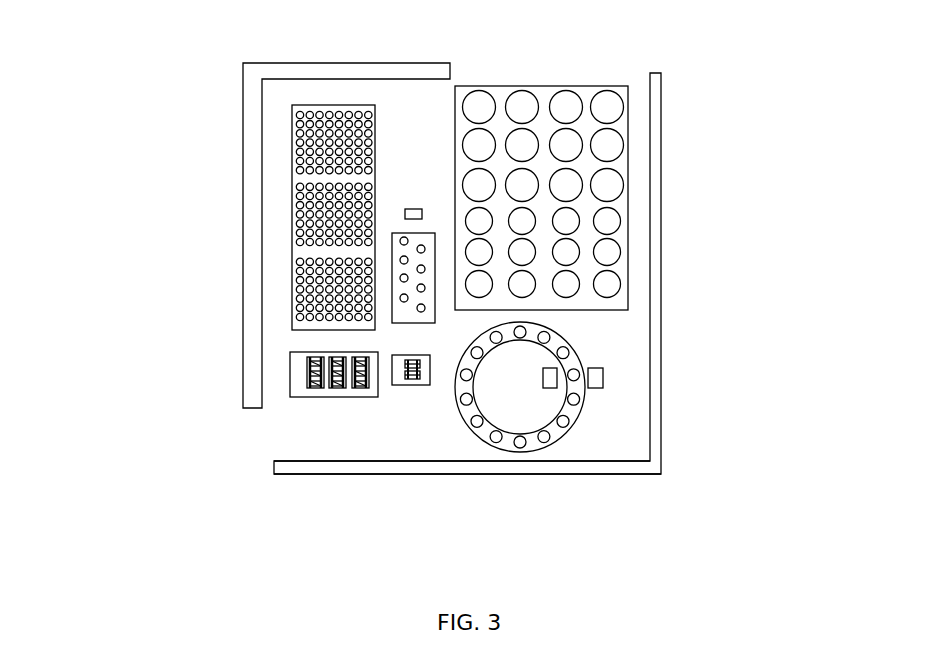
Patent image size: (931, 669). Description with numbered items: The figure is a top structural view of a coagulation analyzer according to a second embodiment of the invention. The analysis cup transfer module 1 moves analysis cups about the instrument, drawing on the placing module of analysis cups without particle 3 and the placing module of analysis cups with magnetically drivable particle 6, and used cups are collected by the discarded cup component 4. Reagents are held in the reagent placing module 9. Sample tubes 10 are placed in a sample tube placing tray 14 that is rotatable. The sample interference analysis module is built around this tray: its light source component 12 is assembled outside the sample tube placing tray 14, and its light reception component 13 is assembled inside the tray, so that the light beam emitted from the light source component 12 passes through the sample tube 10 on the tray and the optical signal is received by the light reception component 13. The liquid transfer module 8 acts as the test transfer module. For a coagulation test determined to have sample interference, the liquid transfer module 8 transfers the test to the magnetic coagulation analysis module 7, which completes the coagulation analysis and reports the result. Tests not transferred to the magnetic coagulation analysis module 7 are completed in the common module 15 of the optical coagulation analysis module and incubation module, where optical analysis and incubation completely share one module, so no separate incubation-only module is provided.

The analysis cup transfer module 1 is at (377, 260).
The placing module of analysis cup without particle 3 is at (289, 184).
The discarded cup component 4 is at (404, 215).
The common module of optical coagulation analysis module and incubation module 15 is at (390, 267).
The placing module of analysis cup with magnetically drivable particle 6 is at (288, 366).
The magnetic coagulation analysis module 7 is at (284, 435).
The liquid transfer module 8 is at (467, 494).
The reagent placing module 9 is at (624, 198).
The sample tube 10 is at (579, 421).
The light source component of the sample interference analysis module 12 is at (664, 397).
The light reception component of the sample interference analysis module 13 is at (644, 357).
The sample tube placing tray 14 is at (546, 424).